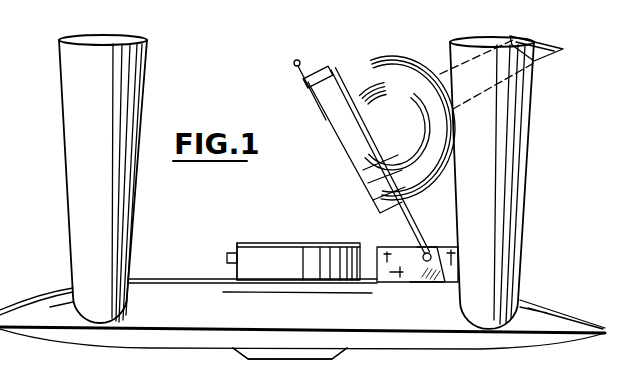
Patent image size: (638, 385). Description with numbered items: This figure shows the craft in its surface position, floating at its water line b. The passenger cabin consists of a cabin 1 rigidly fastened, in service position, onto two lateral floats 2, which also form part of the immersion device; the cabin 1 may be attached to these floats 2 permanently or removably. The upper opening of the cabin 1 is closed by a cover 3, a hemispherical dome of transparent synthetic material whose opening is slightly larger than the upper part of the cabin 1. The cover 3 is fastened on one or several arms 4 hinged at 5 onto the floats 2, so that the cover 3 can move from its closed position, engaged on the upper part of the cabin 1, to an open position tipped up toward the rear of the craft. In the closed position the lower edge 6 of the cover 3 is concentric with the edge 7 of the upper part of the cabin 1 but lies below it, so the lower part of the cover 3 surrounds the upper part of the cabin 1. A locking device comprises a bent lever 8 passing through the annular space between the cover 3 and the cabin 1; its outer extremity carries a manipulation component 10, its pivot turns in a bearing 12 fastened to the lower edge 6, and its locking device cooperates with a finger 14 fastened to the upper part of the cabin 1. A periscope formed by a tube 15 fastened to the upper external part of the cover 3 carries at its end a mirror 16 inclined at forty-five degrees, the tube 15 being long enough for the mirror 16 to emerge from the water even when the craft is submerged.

The cabin 1 is at (268, 268).
The lateral floats 2 is at (302, 319).
The cover 3 is at (407, 128).
The arms 4 is at (409, 224).
The hinge 5 is at (429, 252).
The lower edge of the cover 6 is at (341, 136).
The edge of the upper part of the cabin 7 is at (237, 250).
The bent lever 8 is at (311, 93).
The manipulation component 10 is at (297, 60).
The bearing 12 is at (322, 64).
The finger 14 is at (227, 257).
The tube 15 is at (538, 60).
The mirror 16 is at (552, 33).
The water line b is at (549, 336).